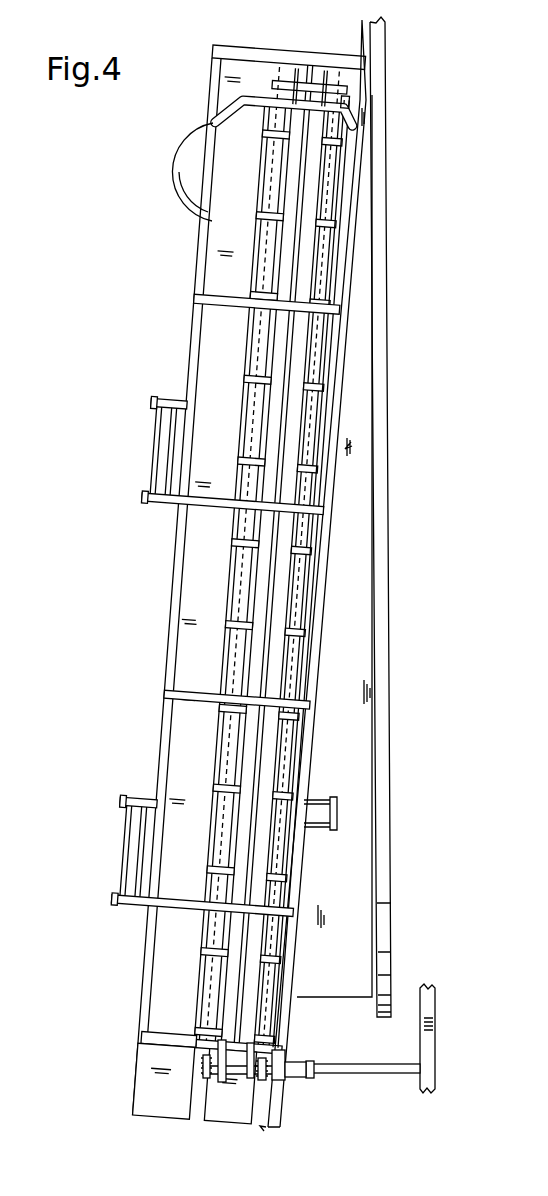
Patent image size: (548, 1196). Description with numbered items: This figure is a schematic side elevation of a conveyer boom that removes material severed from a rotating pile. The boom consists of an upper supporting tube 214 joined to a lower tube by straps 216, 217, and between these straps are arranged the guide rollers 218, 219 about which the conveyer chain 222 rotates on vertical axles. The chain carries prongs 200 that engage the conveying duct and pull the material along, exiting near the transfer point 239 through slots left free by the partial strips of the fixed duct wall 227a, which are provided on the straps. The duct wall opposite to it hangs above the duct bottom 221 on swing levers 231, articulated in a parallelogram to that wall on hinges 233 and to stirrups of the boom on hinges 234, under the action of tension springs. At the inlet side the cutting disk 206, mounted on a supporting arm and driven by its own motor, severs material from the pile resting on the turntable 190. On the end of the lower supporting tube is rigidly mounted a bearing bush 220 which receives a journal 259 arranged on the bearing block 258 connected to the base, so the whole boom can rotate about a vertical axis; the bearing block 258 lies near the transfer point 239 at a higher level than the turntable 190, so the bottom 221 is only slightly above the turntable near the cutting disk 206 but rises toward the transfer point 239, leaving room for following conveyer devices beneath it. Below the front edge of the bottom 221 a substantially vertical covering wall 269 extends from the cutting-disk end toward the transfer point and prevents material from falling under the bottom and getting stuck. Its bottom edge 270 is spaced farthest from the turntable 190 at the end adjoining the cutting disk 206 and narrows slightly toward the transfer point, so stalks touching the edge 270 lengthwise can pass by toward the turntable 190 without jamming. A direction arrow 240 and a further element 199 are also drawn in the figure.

The turntable 190 is at (384, 506).
The mounting bracket 199 is at (437, 1000).
The prongs 200 is at (247, 380).
The cutting disk 206 is at (176, 178).
The upper supporting tube 214 is at (208, 258).
The strap 216 is at (231, 124).
The strap 217 is at (222, 302).
The guide roller 218 is at (205, 1078).
The guide roller 219 is at (280, 68).
The bearing bush 220 is at (298, 1062).
The duct bottom 221 is at (366, 62).
The conveyer chain 222 is at (305, 580).
The duct wall 227a is at (165, 960).
The swing lever 231 is at (160, 440).
The hinge 233 is at (166, 400).
The hinge 234 is at (170, 500).
The transfer point 239 is at (264, 1131).
The direction arrow 240 is at (352, 446).
The bearing block 258 is at (383, 1074).
The journal 259 is at (313, 1066).
The covering wall 269 is at (352, 975).
The bottom edge 270 is at (364, 118).